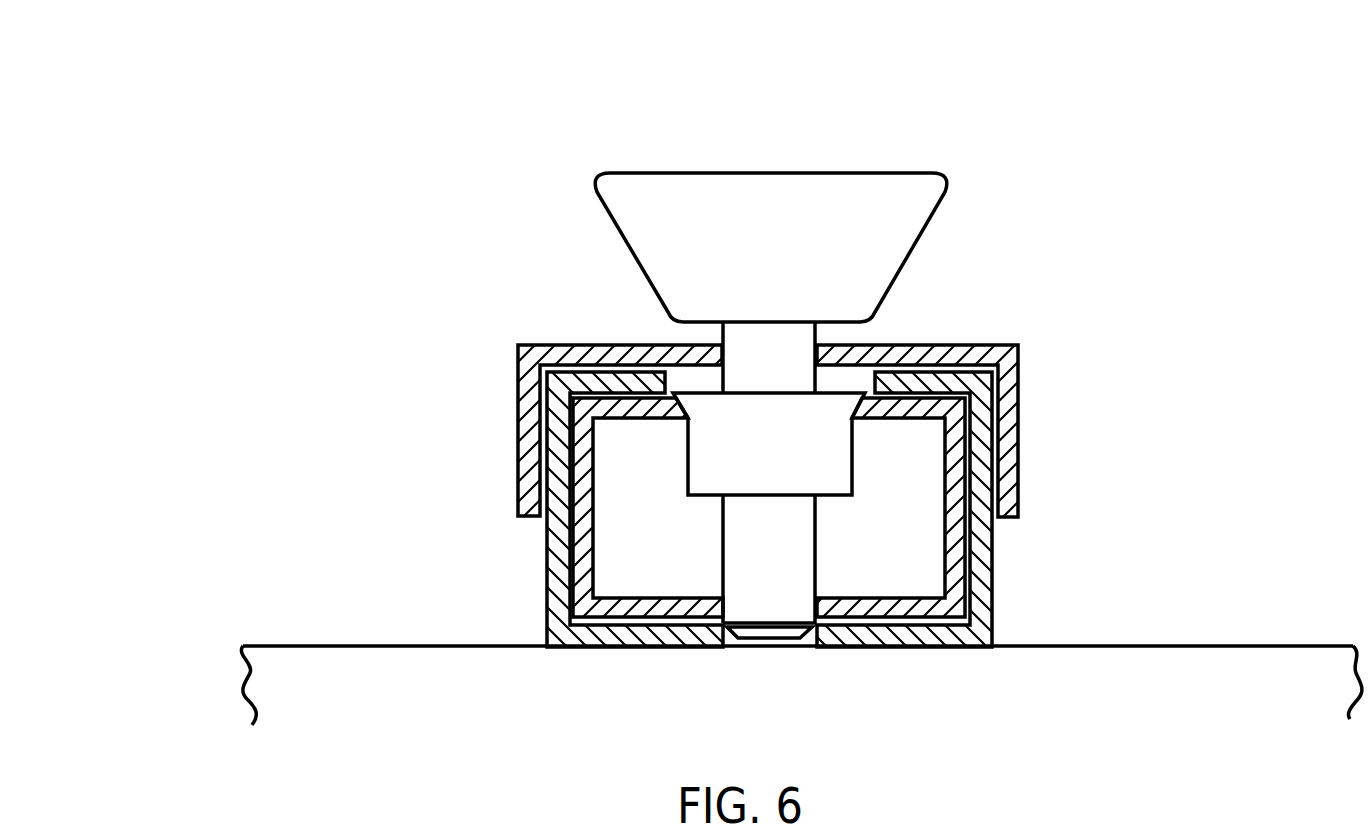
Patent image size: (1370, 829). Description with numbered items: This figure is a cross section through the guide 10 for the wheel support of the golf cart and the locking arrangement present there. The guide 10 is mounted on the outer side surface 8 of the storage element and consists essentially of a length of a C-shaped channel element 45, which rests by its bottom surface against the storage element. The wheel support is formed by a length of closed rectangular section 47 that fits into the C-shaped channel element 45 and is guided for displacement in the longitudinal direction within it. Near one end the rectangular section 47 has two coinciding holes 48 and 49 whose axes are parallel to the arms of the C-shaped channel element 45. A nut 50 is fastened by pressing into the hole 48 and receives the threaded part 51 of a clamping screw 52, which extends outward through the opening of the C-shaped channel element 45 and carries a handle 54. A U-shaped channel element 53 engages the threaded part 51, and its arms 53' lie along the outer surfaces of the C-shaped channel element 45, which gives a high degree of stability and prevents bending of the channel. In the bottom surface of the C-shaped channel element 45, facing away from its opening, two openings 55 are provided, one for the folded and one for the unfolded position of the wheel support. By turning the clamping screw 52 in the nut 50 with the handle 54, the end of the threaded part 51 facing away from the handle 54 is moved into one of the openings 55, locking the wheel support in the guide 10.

The outer side surface 8 is at (1225, 646).
The guide 10 is at (542, 533).
The C-shaped channel element 45 is at (558, 597).
The closed rectangular section 47 is at (953, 538).
The hole 48 is at (862, 407).
The hole 49 is at (820, 607).
The nut 50 is at (825, 447).
The threaded part 51 is at (738, 537).
The clamping screw 52 is at (852, 168).
The U-shaped channel element 53 is at (755, 374).
The arms 53' is at (755, 431).
The handle 54 is at (950, 182).
The openings 55 is at (772, 646).